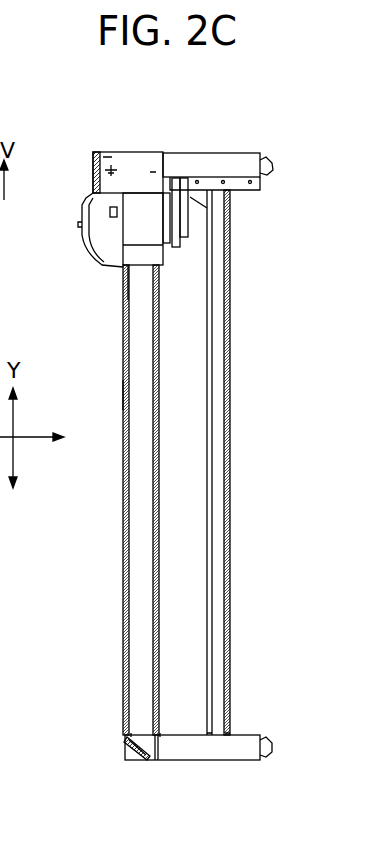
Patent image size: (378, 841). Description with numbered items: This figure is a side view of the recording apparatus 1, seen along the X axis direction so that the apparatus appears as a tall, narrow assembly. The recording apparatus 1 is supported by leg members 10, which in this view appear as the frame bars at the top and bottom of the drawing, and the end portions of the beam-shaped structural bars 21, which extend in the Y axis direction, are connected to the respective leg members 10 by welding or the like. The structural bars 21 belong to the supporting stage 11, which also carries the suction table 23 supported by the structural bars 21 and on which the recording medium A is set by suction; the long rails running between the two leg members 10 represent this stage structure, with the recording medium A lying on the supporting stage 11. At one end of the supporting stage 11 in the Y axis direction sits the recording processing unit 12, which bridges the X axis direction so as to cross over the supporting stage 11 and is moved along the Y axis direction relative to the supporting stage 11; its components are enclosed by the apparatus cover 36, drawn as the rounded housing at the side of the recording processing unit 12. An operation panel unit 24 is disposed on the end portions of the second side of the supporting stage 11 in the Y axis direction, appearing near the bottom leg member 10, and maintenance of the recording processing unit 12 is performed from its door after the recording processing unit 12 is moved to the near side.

The recording apparatus 1 is at (221, 129).
The leg member 10 is at (195, 160).
The supporting stage 11 is at (126, 333).
The recording processing unit 12 is at (83, 200).
The structural bar 21 is at (145, 376).
The suction table 23 is at (123, 292).
The operation panel unit 24 is at (130, 763).
The apparatus cover 36 is at (82, 245).
The recording medium A is at (122, 395).